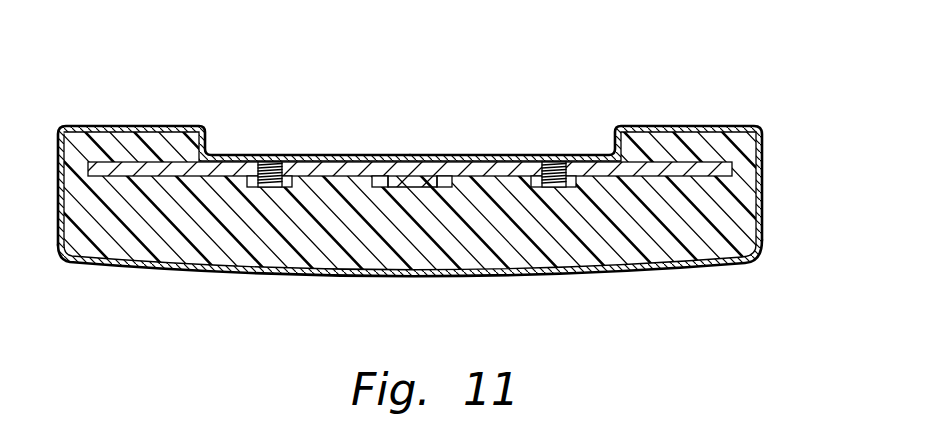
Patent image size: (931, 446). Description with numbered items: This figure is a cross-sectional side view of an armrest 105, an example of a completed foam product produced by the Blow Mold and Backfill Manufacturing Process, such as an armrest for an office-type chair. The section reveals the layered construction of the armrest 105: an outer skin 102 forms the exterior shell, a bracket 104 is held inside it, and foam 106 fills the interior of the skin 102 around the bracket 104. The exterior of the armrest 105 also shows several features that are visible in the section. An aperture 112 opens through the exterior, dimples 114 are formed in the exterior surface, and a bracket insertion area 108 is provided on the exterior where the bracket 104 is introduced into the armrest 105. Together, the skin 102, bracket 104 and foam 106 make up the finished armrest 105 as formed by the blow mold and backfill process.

The skin 102 is at (100, 124).
The bracket 104 is at (337, 168).
The armrest 105 is at (772, 318).
The foam 106 is at (483, 187).
The bracket insertion area 108 is at (746, 115).
The aperture 112 is at (416, 162).
The dimples 114 is at (270, 165).